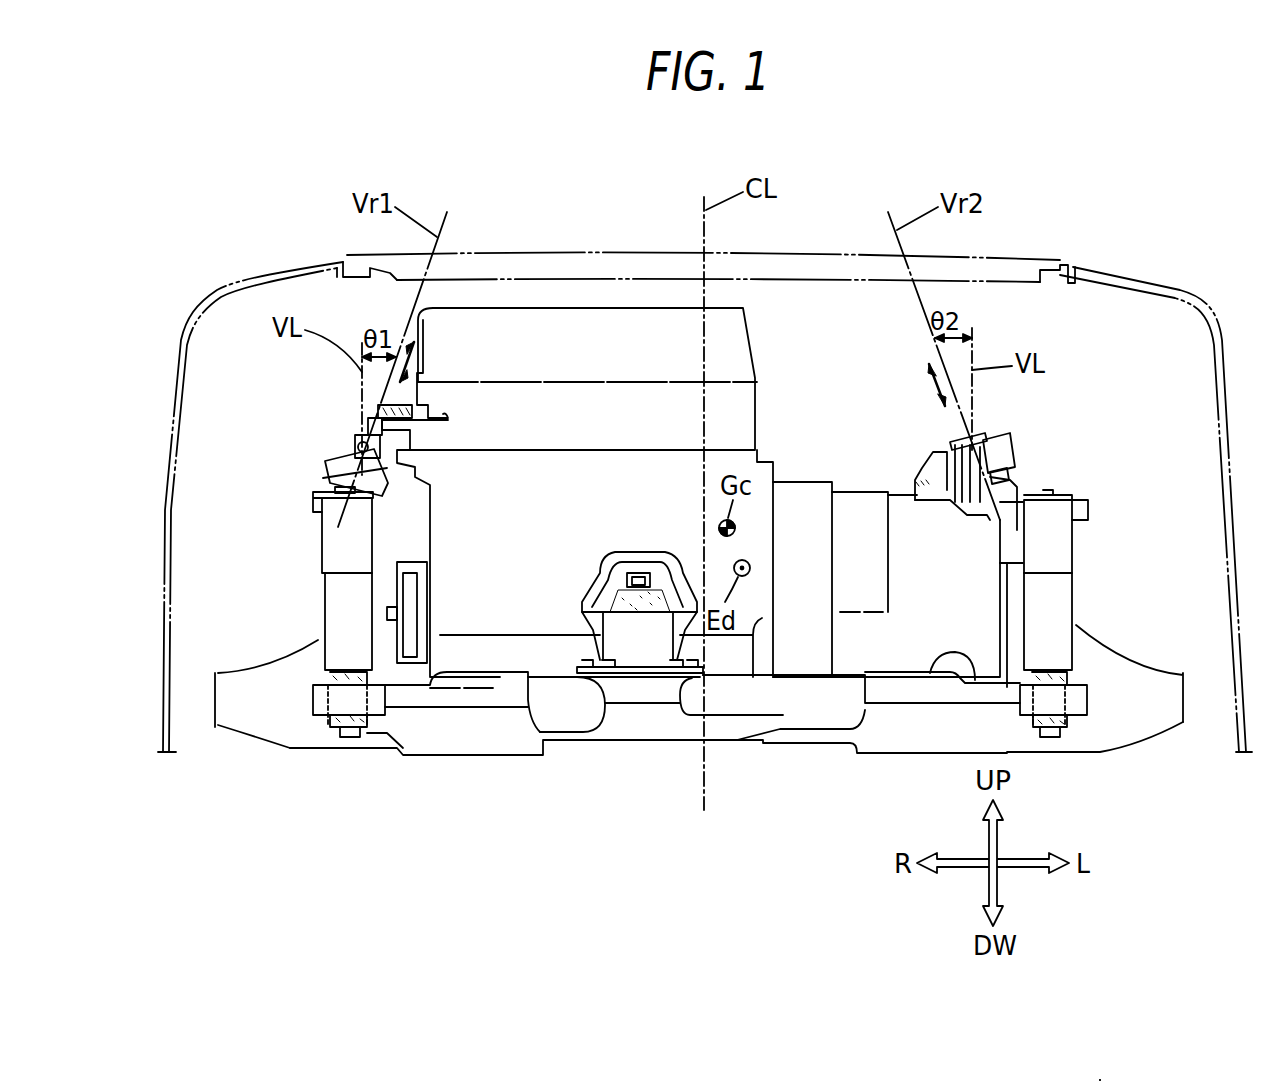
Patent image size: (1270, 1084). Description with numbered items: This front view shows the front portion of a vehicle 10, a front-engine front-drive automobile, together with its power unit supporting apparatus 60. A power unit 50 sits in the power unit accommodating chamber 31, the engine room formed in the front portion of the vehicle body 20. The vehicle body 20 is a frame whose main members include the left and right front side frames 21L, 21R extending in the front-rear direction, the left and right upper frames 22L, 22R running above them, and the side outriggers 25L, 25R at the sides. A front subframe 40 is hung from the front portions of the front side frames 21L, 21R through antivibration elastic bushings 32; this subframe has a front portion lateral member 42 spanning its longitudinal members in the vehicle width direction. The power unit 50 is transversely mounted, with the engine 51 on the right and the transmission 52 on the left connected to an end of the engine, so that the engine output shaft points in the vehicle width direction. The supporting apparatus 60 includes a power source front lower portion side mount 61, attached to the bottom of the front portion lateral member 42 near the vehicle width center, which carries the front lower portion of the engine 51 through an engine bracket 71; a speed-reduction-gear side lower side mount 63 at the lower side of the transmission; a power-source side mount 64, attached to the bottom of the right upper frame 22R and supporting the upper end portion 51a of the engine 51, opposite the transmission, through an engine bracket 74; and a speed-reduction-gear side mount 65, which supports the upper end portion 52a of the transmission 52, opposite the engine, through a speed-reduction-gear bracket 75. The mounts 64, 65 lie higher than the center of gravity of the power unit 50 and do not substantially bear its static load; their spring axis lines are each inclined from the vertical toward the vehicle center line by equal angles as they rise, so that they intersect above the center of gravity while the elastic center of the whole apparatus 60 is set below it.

The vehicle 10 is at (218, 222).
The power unit accommodating chamber 31 is at (215, 327).
The power unit 50 is at (517, 305).
The engine 51 is at (575, 322).
The end portion of the engine 51a is at (382, 428).
The transmission 52 is at (803, 490).
The end portion of the transmission 52a is at (990, 530).
The power unit supporting apparatus 60 is at (1105, 425).
The power source front lower portion side mount 61 is at (657, 650).
The speed-reduction-gear side lower side mount 63 is at (930, 673).
The power-source side mount 64 is at (323, 473).
The speed-reduction-gear side mount 65 is at (1005, 450).
The engine bracket 71 is at (635, 577).
The engine bracket 74 is at (372, 410).
The speed-reduction-gear bracket 75 is at (933, 470).
The vehicle body 20 is at (378, 753).
The front subframe 40 is at (493, 760).
The front portion lateral member 42 is at (623, 732).
The antivibration elastic bushing 32 is at (337, 723).
The right front side frame 21R is at (332, 612).
The right upper frame 22R is at (323, 545).
The left front side frame 21L is at (1063, 602).
The left upper frame 22L is at (1063, 550).
The right side outrigger 25R is at (253, 717).
The left side outrigger 25L is at (1165, 720).